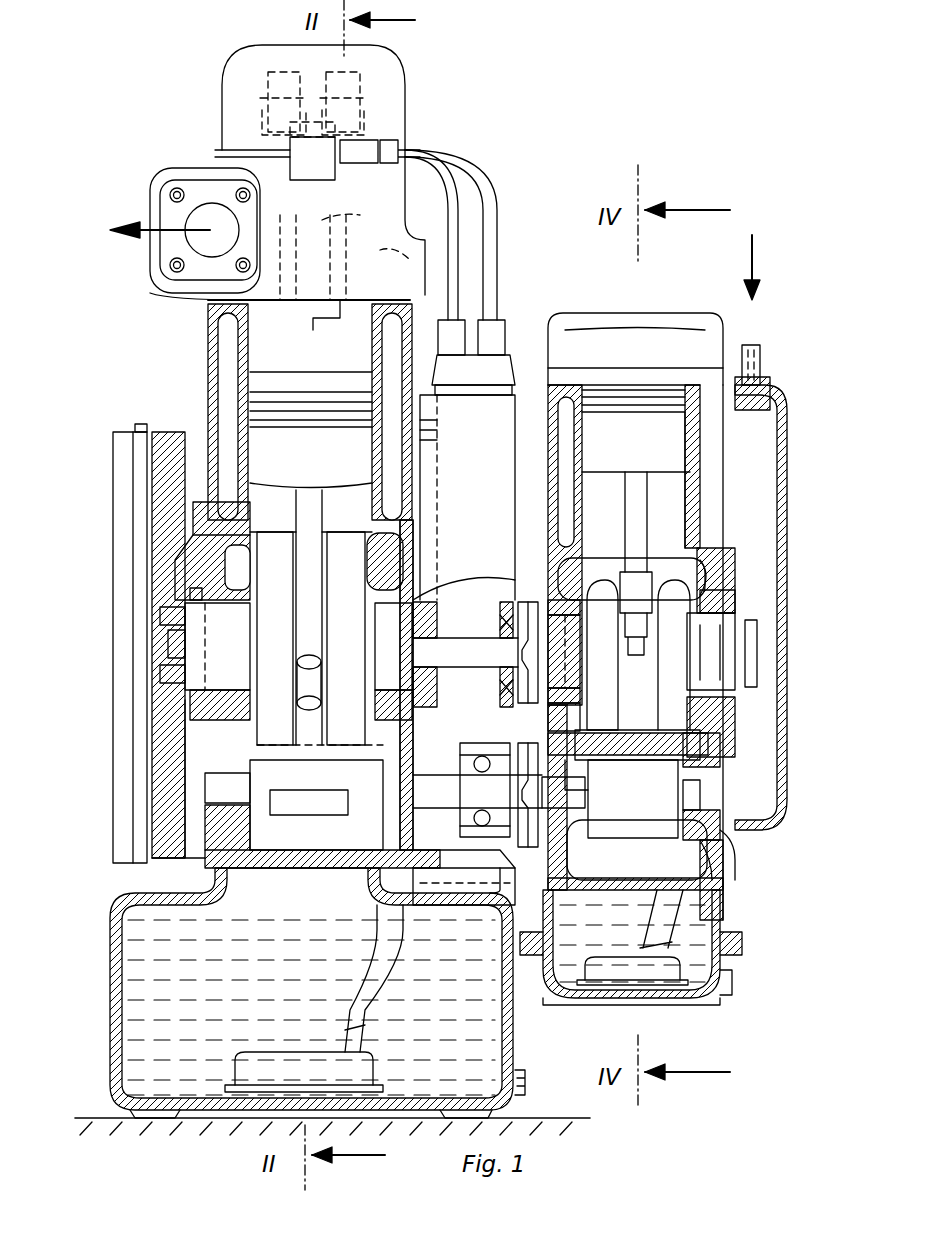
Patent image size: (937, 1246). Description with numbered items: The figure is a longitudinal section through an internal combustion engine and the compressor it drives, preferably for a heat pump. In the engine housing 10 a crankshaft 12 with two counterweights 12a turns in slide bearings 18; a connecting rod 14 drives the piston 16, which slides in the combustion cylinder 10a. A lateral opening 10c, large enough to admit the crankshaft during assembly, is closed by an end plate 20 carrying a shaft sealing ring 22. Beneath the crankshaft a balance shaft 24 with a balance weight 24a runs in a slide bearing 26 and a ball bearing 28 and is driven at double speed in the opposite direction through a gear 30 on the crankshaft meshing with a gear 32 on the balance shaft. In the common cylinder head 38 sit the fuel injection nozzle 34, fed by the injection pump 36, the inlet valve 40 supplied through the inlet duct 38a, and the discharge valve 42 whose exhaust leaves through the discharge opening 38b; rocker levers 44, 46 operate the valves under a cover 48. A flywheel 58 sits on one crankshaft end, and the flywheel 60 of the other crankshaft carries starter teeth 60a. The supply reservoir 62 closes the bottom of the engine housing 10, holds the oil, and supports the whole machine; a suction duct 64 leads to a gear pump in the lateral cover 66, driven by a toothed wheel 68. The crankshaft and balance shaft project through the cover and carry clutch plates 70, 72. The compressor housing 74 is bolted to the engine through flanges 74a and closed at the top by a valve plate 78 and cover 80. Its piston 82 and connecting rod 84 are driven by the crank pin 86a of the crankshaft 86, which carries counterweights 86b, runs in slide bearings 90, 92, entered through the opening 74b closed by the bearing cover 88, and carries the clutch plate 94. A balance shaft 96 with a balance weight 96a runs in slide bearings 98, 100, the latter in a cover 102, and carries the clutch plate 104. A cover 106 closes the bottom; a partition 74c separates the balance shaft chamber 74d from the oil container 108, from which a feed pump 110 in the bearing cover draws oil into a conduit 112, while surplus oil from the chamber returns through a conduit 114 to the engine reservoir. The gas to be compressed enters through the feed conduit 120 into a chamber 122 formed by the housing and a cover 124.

The engine housing 10 is at (208, 400).
The combustion cylinder 10a is at (250, 335).
The lateral opening 10c is at (205, 535).
The crankshaft 12 is at (385, 595).
The counterweights 12a is at (270, 555).
The connecting rod 14 is at (312, 515).
The piston 16 is at (300, 380).
The slide bearings 18 is at (225, 690).
The end plate 20 is at (185, 768).
The shaft sealing ring 22 is at (190, 595).
The balance shaft 24 is at (372, 790).
The balance weight 24a is at (305, 770).
The slide bearing 26 is at (205, 795).
The ball bearing 28 is at (483, 750).
The gear 30 is at (225, 560).
The gear 32 is at (240, 818).
The fuel injection nozzle 34 is at (305, 165).
The injection pump 36 is at (495, 375).
The cylinder head 38 is at (225, 170).
The inlet duct 38a is at (415, 160).
The discharge opening 38b is at (195, 218).
The inlet valve 40 is at (340, 215).
The discharge valve 42 is at (205, 298).
The rocker lever 44 is at (360, 95).
The rocker lever 46 is at (268, 90).
The cover 48 is at (222, 112).
The flywheel 58 is at (170, 435).
The flywheel 60 is at (125, 475).
The teeth 60a is at (135, 426).
The supply reservoir 62 is at (508, 1068).
The suction duct 64 is at (355, 1000).
The lateral cover 66 is at (495, 435).
The toothed wheel 68 is at (430, 625).
The clutch plate 70 is at (510, 705).
The clutch plate 72 is at (538, 725).
The compressor housing 74 is at (720, 462).
The cylinder 74a is at (690, 495).
The opening 74b is at (740, 540).
The partition 74c is at (725, 888).
The chamber 74d is at (710, 870).
The valve plate 78 is at (610, 340).
The cover 80 is at (690, 330).
The piston 82 is at (605, 455).
The connecting rod 84 is at (635, 535).
The crankshaft 86 is at (600, 595).
The crank pin 86a is at (668, 595).
The counterweights 86b is at (640, 735).
The bearing cover 88 is at (730, 585).
The slide bearing 90 is at (570, 700).
The slide bearing 92 is at (730, 640).
The clutch plate 94 is at (535, 650).
The balance shaft 96 is at (590, 775).
The balance weight 96a is at (690, 845).
The slide bearing 98 is at (720, 795).
The slide bearing 100 is at (570, 835).
The cover 102 is at (575, 755).
The clutch plate 104 is at (535, 785).
The cover 106 is at (660, 1000).
The chamber 108 is at (700, 962).
The feed pump 110 is at (760, 660).
The conduit 112 is at (672, 900).
The conduit 114 is at (495, 875).
The feed conduit 120 is at (752, 348).
The chamber 122 is at (750, 490).
The cover 124 is at (765, 405).